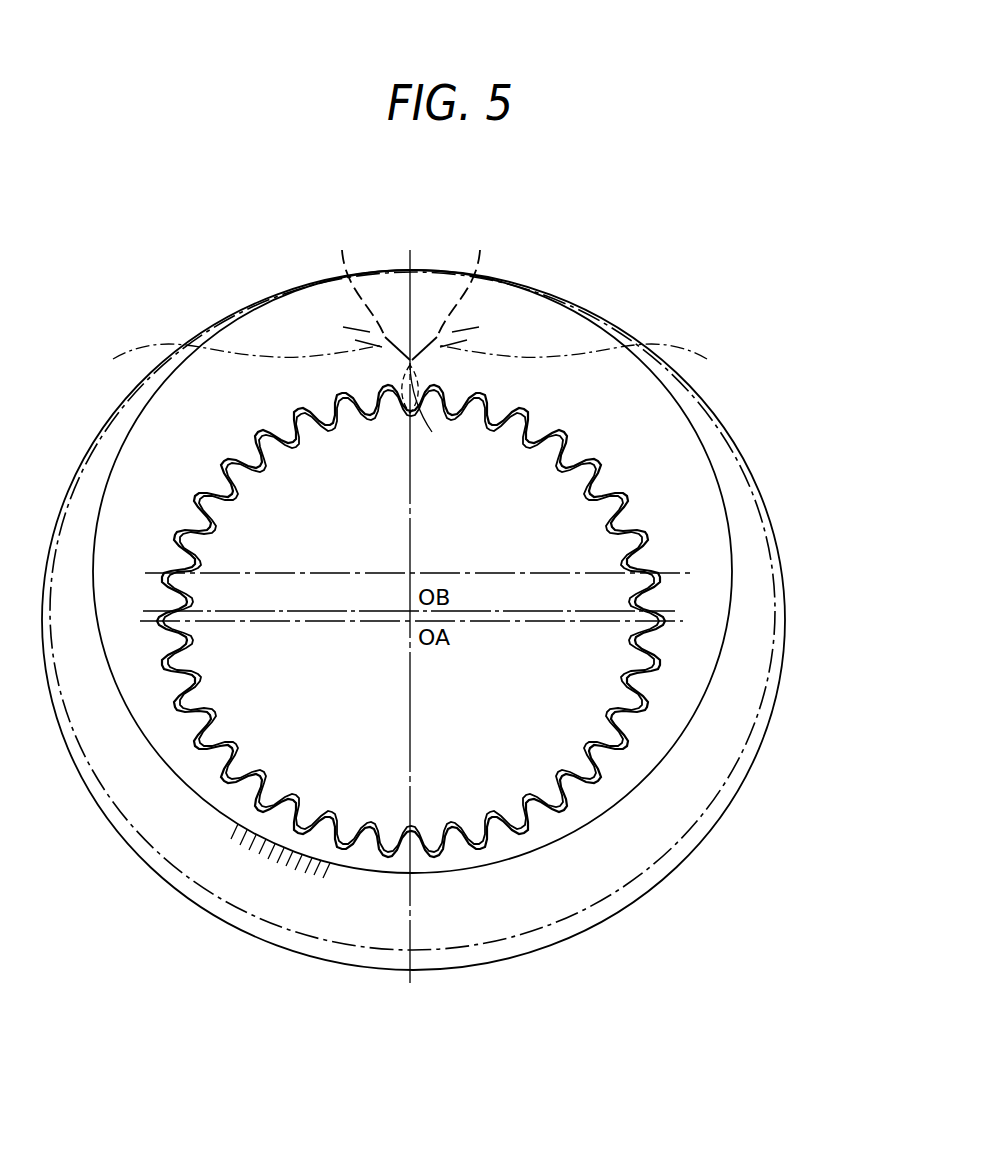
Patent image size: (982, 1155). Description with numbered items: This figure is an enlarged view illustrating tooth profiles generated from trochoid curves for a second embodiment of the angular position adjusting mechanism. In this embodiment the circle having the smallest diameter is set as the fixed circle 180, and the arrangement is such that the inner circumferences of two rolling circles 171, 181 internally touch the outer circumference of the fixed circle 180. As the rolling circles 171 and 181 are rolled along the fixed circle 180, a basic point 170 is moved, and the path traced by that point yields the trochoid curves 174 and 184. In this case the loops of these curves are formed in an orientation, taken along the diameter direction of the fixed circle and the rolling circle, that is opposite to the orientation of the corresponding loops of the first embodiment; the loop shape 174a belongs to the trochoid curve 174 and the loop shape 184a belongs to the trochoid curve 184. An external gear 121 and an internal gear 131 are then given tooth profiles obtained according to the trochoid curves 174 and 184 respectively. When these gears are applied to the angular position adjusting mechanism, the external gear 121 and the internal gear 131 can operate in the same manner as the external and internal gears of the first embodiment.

The external gear 121 is at (560, 810).
The internal gear 131 is at (588, 778).
The basic point 170 is at (412, 405).
The rolling circle 171 is at (703, 814).
The trochoid curve 174 is at (459, 290).
The loop shape 174a is at (362, 290).
The fixed circle 180 is at (708, 682).
The rolling circle 181 is at (760, 748).
The trochoid curve 184 is at (601, 360).
The loop shape 184a is at (216, 360).